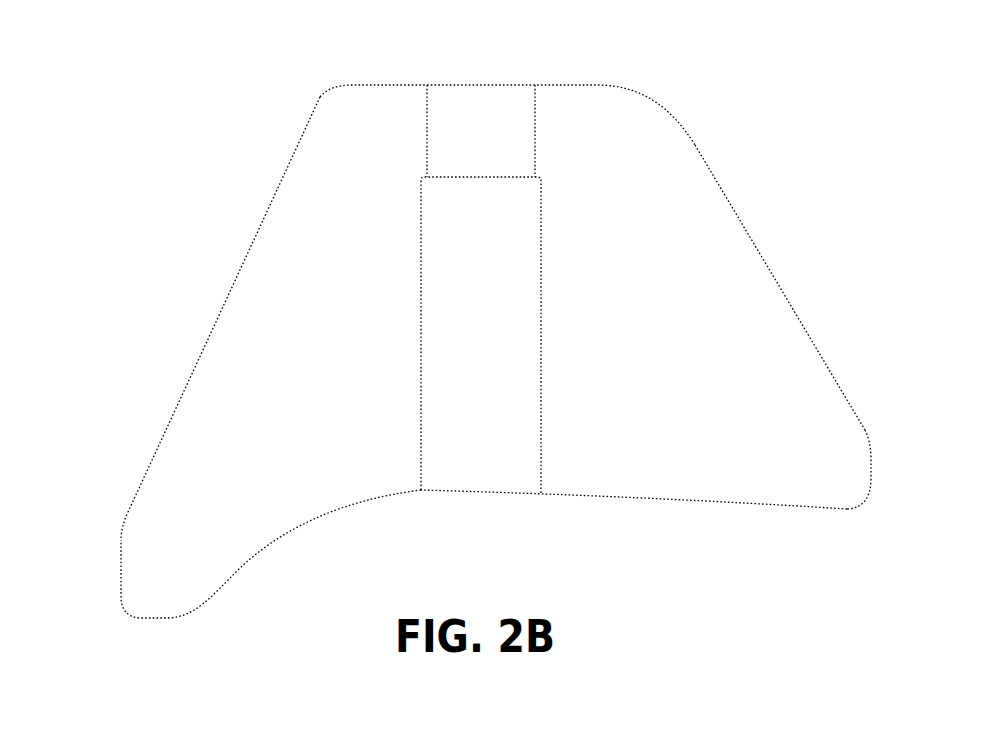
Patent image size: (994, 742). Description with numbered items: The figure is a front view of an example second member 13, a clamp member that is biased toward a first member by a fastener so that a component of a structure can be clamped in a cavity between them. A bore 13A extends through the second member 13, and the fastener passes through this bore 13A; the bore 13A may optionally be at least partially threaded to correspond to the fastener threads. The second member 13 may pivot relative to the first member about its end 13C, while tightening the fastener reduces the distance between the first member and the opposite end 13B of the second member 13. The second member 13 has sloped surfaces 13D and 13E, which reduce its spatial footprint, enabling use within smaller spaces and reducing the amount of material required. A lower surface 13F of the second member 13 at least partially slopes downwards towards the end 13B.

The second member 13 is at (258, 76).
The bore 13A is at (538, 253).
The end 13B is at (869, 472).
The end 13C is at (118, 590).
The sloped surface 13D is at (758, 258).
The sloped surface 13E is at (238, 272).
The lower surface 13F is at (710, 502).